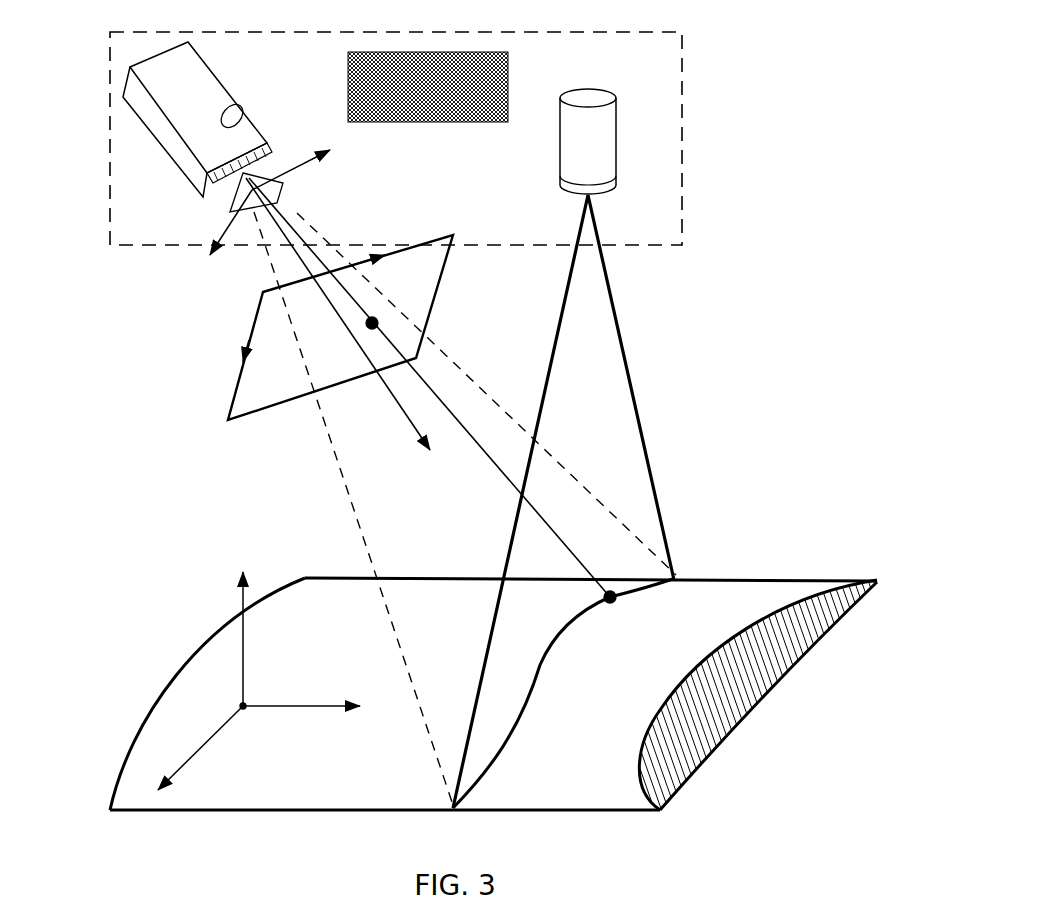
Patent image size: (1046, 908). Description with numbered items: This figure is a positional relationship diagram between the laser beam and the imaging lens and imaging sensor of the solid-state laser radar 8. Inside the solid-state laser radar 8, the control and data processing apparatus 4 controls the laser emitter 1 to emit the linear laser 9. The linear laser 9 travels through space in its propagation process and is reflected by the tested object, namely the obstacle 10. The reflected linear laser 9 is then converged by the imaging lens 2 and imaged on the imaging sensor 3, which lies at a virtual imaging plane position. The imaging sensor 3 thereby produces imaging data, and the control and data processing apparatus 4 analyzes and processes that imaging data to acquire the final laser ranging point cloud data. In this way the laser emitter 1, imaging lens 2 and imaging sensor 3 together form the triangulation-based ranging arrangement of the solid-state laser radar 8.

The laser emitter 1 is at (604, 135).
The imaging lens 2 is at (163, 130).
The imaging sensor 3 is at (240, 382).
The control and data processing apparatus 4 is at (508, 93).
The solid-state laser radar 8 is at (683, 78).
The linear laser plane 9 is at (630, 337).
The obstacle 10 is at (733, 574).